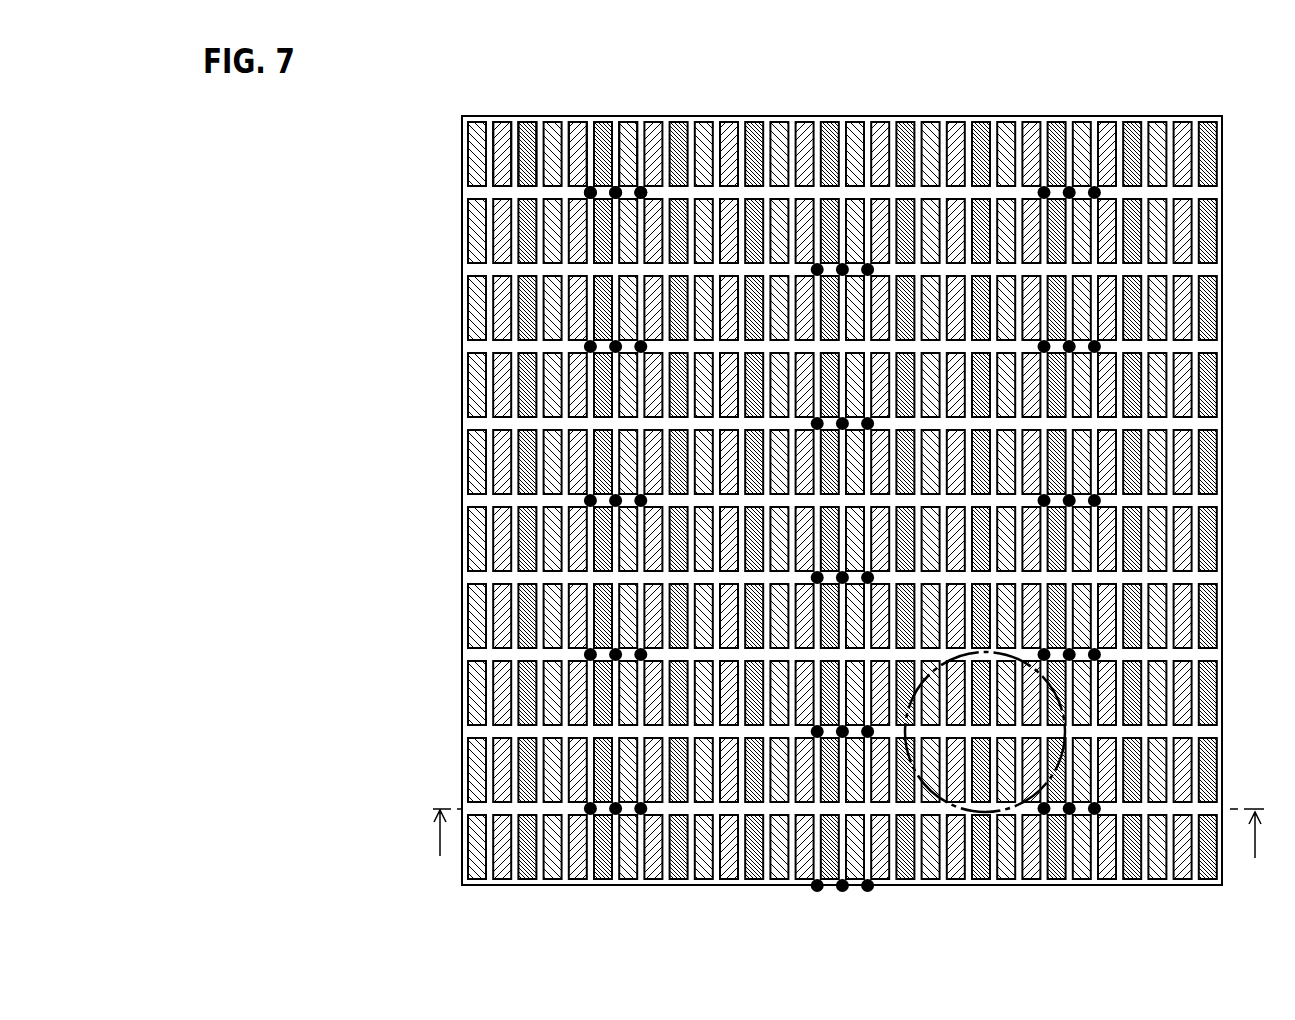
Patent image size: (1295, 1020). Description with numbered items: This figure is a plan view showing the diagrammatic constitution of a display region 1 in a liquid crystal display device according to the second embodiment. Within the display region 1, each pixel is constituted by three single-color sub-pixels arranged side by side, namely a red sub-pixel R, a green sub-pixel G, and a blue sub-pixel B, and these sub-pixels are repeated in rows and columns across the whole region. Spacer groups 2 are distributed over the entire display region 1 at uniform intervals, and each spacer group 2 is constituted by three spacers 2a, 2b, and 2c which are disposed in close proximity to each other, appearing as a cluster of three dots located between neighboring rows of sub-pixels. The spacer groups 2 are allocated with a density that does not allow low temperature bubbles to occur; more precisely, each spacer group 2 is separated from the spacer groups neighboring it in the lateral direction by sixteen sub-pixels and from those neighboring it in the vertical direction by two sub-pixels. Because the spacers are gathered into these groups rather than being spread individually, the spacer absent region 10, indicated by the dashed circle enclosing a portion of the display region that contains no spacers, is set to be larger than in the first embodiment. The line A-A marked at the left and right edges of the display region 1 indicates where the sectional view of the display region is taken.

The display region 1 is at (975, 109).
The spacer group 2 is at (695, 67).
The spacer 2a is at (582, 178).
The spacer 2b is at (608, 178).
The spacer 2c is at (634, 178).
The red sub-pixel R is at (470, 118).
The green sub-pixel G is at (496, 118).
The blue sub-pixel B is at (522, 118).
The spacer absent region 10 is at (1047, 684).
The line A- A is at (845, 835).